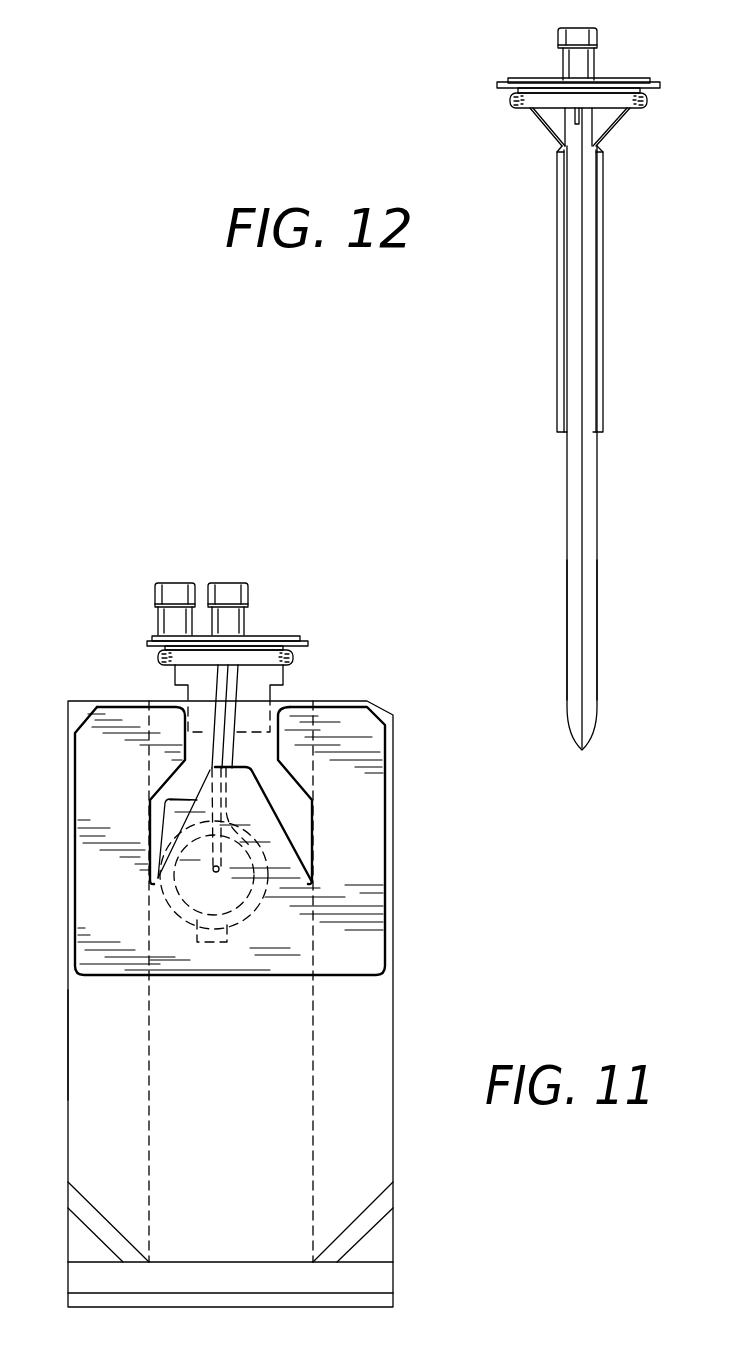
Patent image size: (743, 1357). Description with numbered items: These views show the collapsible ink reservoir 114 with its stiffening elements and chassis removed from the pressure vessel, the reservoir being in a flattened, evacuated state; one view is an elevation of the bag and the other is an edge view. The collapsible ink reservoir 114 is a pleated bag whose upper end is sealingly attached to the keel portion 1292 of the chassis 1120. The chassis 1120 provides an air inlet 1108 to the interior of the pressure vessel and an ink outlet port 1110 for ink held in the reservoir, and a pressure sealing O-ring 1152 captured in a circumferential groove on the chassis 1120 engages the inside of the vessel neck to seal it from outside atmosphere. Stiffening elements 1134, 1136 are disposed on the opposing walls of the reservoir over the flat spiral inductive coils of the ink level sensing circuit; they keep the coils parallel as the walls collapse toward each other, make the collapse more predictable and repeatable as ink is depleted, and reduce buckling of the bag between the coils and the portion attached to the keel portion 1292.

In FIG. 12, the collapsible ink reservoir 114 is at (608, 591).
In FIG. 11, the collapsible ink reservoir 114 is at (59, 996).
In FIG. 11, the air inlet 1108 is at (155, 596).
In FIG. 12, the ink outlet port 1110 is at (598, 36).
In FIG. 11, the ink outlet port 1110 is at (247, 596).
In FIG. 12, the chassis 1120 is at (543, 60).
In FIG. 11, the chassis 1120 is at (266, 619).
In FIG. 12, the stiffening element 1134 is at (600, 395).
In FIG. 12, the stiffening element 1136 is at (560, 397).
In FIG. 11, the stiffening element 1136 is at (372, 820).
In FIG. 12, the pressure sealing O-ring 1152 is at (648, 98).
In FIG. 11, the pressure sealing O-ring 1152 is at (160, 660).
In FIG. 11, the keel portion 1292 is at (262, 692).